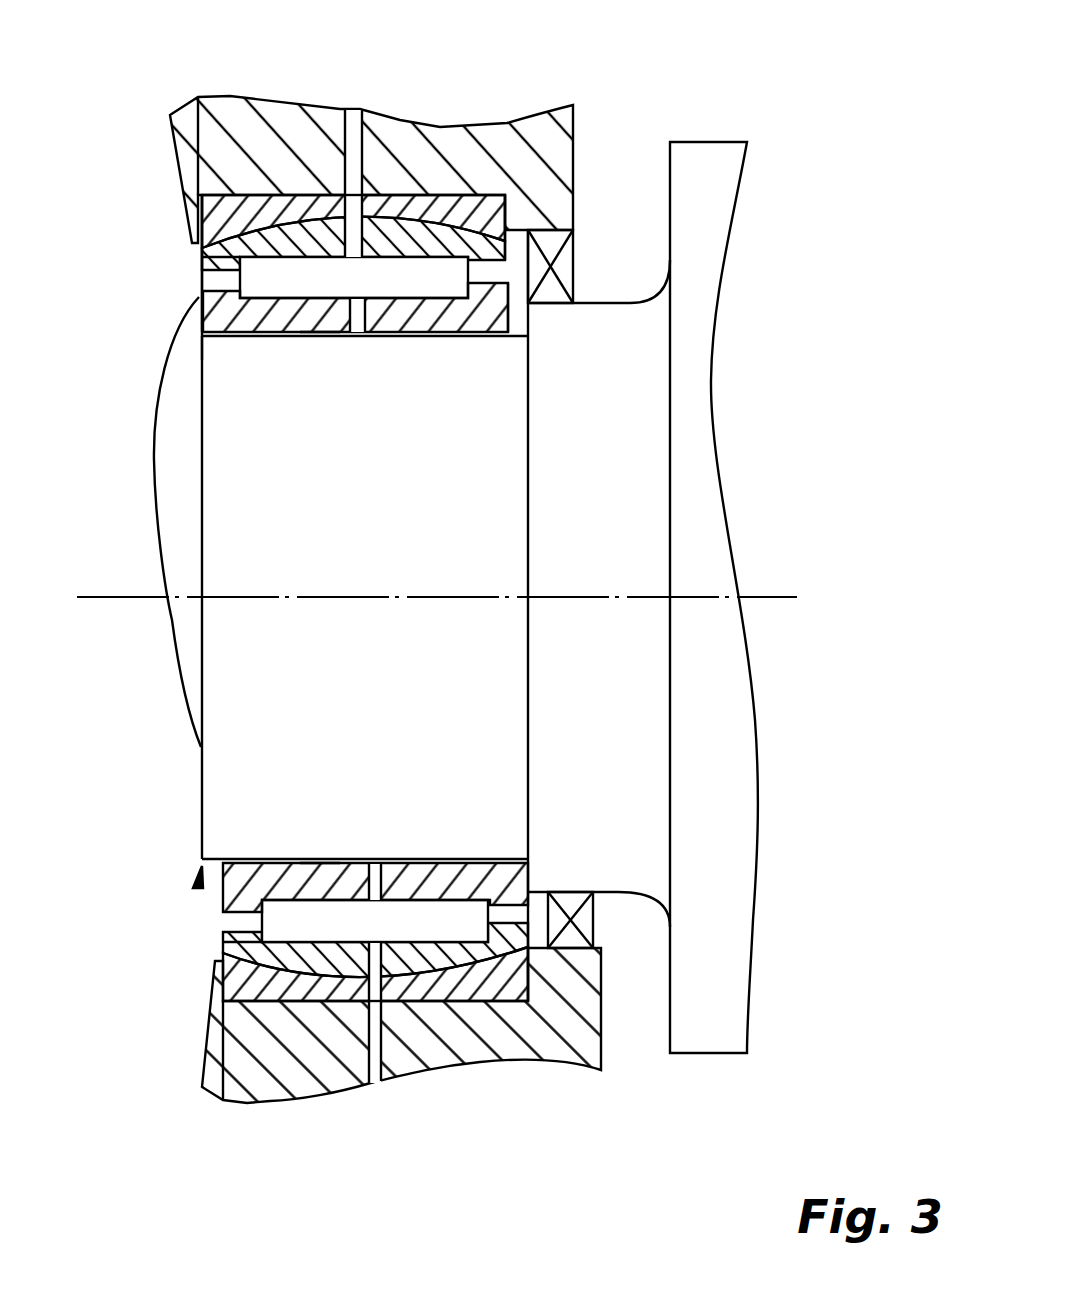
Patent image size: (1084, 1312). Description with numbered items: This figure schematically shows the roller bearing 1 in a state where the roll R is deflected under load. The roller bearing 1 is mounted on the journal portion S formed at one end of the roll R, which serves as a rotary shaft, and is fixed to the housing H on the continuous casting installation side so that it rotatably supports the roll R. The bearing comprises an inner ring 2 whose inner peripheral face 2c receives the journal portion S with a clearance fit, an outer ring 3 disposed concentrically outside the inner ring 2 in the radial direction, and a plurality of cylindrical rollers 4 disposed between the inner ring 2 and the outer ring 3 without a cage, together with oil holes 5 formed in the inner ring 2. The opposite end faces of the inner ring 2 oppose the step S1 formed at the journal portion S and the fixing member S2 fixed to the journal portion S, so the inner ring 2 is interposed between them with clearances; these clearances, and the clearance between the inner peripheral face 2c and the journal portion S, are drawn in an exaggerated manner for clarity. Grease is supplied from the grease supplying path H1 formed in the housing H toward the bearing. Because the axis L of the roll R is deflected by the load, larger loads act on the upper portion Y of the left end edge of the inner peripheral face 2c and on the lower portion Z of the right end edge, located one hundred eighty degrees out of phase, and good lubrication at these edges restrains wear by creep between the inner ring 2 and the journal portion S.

The roller bearing 1 is at (197, 281).
The inner ring 2 is at (198, 298).
The inner peripheral face of the inner ring 2c is at (318, 337).
The outer ring 3 is at (198, 262).
The cylindrical rollers 4 is at (276, 275).
The oil holes 5 is at (357, 337).
The journal portion S is at (277, 812).
The step S1 is at (547, 321).
The fixing member S2 is at (190, 320).
The upper portion of left end edge Y is at (202, 352).
The lower portion of right end edge Z is at (526, 861).
The axis of the roll L is at (773, 597).
The housing H is at (410, 138).
The grease supplying path H1 is at (348, 125).
The roll R is at (701, 165).